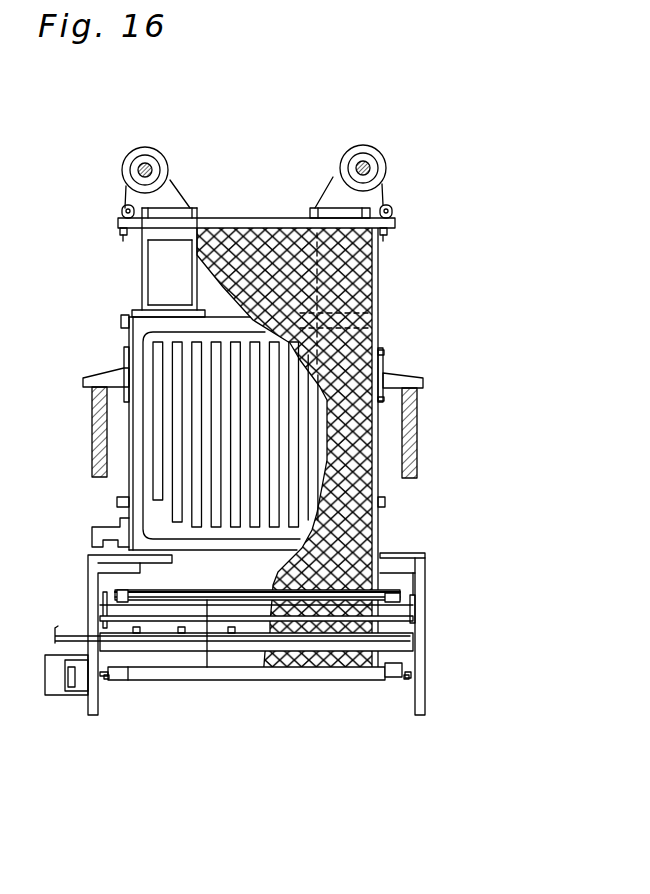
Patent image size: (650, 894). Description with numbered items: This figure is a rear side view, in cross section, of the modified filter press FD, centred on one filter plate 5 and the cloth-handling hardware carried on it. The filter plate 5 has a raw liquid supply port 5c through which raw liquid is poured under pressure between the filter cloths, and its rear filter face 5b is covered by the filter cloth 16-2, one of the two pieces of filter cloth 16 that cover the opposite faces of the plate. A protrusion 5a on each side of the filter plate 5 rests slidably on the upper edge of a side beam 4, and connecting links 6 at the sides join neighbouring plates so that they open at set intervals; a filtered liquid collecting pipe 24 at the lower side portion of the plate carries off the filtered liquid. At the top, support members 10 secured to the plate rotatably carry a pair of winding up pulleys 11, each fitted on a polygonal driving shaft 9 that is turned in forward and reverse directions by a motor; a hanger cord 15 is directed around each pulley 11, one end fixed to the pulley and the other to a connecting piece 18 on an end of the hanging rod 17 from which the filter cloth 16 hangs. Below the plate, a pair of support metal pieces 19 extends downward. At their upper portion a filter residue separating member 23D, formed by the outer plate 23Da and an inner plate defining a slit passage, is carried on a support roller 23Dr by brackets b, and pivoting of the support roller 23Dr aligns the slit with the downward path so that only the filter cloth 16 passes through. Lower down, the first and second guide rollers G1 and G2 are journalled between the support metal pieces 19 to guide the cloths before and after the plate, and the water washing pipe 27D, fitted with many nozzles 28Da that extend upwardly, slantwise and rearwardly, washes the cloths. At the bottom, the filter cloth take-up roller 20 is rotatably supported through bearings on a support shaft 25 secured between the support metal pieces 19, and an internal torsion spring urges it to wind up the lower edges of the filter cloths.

The filter press FD is at (349, 104).
The filter cloth 16 is at (298, 360).
The filter cloth 16-2 is at (375, 260).
The hanging rod 17 is at (255, 218).
The connecting piece 18 is at (122, 212).
The raw liquid supply port 5c is at (247, 293).
The winding up pulley 11 is at (146, 147).
The driving shaft 9 is at (143, 168).
The support member 10 is at (178, 196).
The hanger cord 15 is at (123, 197).
The filter plate 5 is at (124, 458).
The filter face 5b is at (200, 410).
The connecting link 6 is at (121, 321).
The protrusion 5a is at (107, 367).
The side beam 4 is at (92, 400).
The filtered liquid collecting pipe 24 is at (97, 527).
The support metal piece 19 is at (82, 564).
The filter residue separating member 23D is at (178, 583).
The bracket b is at (116, 598).
The first guide roller G1 is at (399, 615).
The nozzle 28Da is at (231, 634).
The water washing pipe 27D is at (398, 646).
The filter cloth take-up roller 20 is at (152, 689).
The support roller 23Dr is at (401, 590).
The outer plate 23Da is at (207, 600).
The second guide roller G2 is at (413, 677).
The support shaft 25 is at (107, 679).